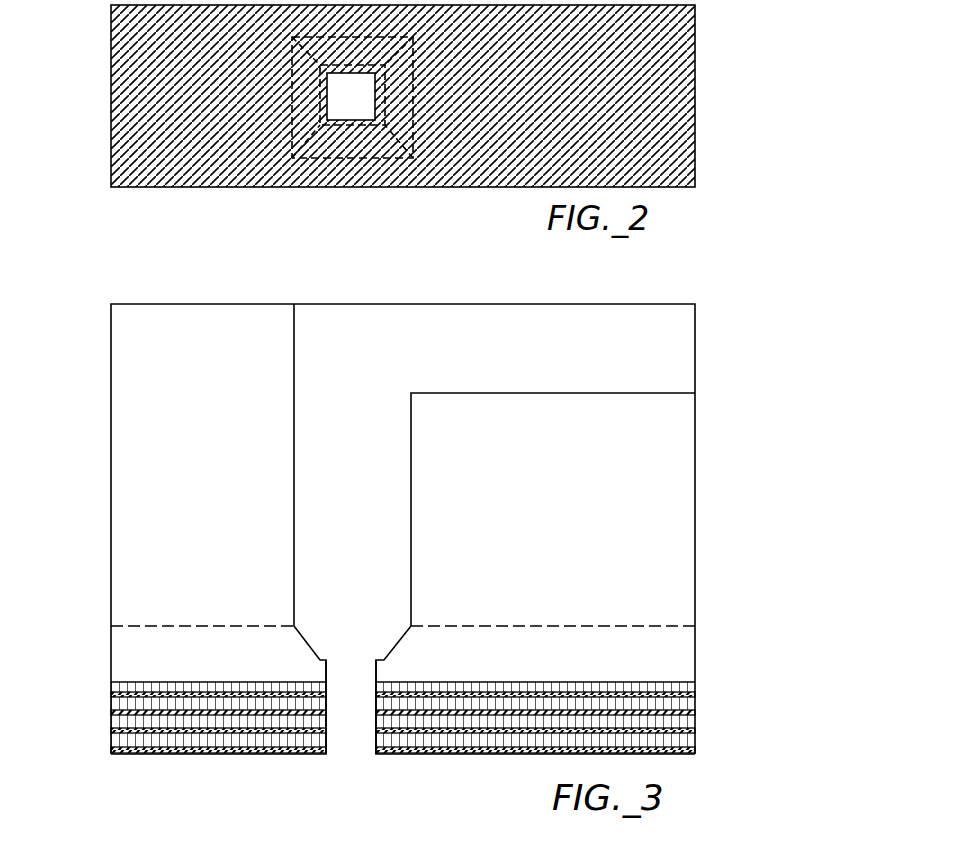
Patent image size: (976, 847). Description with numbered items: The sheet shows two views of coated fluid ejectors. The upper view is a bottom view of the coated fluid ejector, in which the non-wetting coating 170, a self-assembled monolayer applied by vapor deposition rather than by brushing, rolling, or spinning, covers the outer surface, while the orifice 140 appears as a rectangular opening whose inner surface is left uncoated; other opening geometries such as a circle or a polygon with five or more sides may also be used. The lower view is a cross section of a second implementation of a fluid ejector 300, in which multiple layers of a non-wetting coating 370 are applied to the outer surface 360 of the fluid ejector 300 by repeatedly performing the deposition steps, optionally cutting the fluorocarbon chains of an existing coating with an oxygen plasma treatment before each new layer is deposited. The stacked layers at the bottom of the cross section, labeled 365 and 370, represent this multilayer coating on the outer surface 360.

In FIG. 2, the orifice 140 is at (372, 104).
In FIG. 2, the non-wetting coating 170 is at (497, 104).
In FIG. 3, the fluid ejector 300 is at (442, 529).
In FIG. 3, the outer surface 360 is at (395, 690).
In FIG. 3, the layer stack 365 is at (695, 737).
In FIG. 3, the non-wetting coating 370 is at (111, 747).